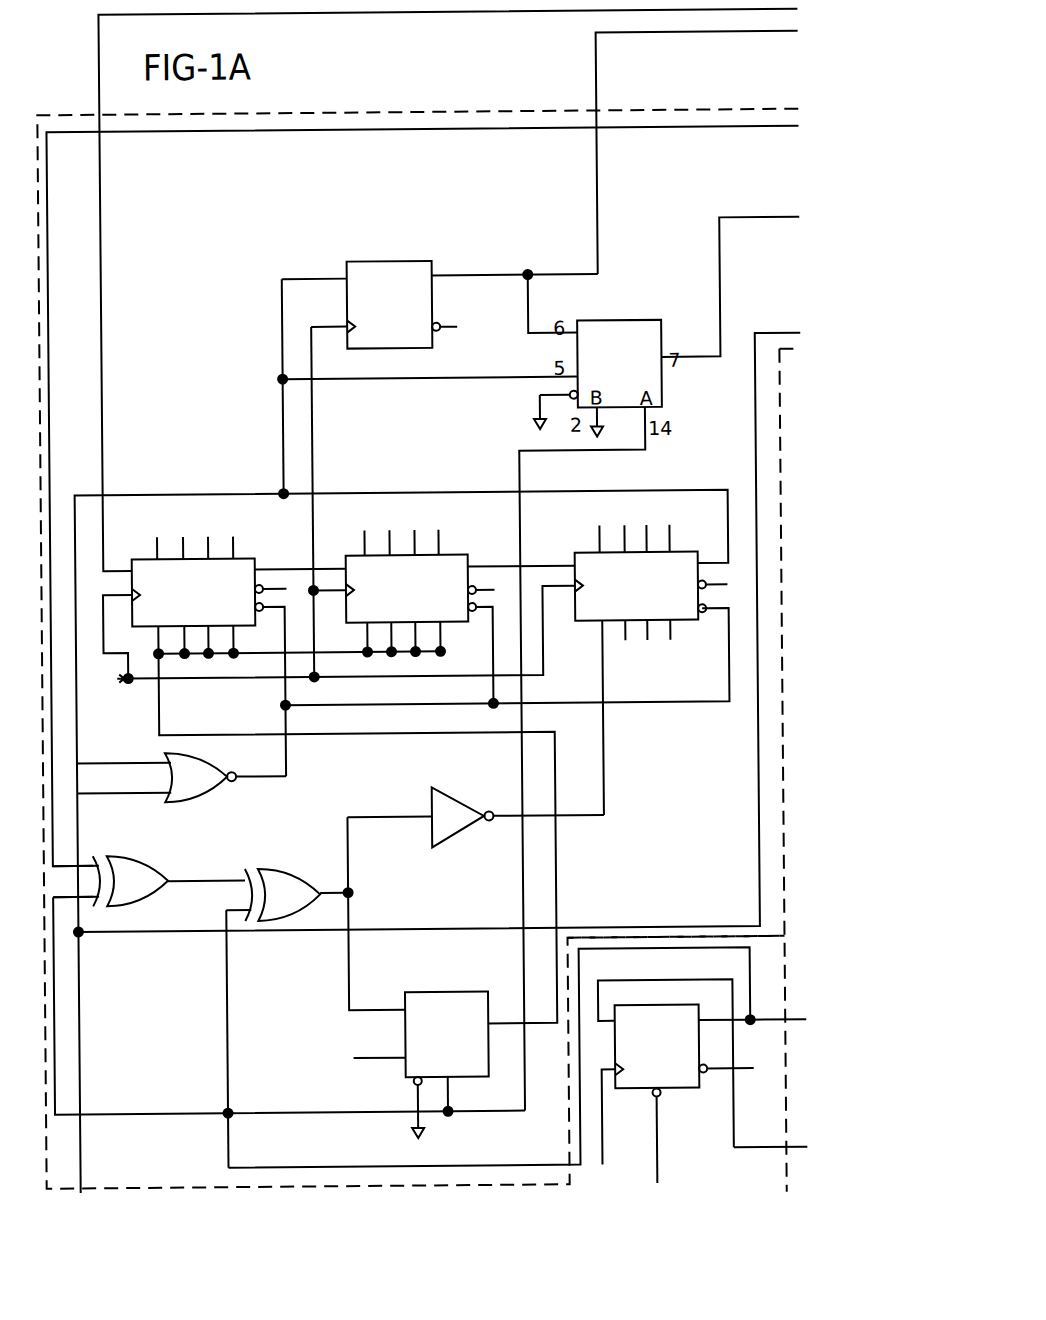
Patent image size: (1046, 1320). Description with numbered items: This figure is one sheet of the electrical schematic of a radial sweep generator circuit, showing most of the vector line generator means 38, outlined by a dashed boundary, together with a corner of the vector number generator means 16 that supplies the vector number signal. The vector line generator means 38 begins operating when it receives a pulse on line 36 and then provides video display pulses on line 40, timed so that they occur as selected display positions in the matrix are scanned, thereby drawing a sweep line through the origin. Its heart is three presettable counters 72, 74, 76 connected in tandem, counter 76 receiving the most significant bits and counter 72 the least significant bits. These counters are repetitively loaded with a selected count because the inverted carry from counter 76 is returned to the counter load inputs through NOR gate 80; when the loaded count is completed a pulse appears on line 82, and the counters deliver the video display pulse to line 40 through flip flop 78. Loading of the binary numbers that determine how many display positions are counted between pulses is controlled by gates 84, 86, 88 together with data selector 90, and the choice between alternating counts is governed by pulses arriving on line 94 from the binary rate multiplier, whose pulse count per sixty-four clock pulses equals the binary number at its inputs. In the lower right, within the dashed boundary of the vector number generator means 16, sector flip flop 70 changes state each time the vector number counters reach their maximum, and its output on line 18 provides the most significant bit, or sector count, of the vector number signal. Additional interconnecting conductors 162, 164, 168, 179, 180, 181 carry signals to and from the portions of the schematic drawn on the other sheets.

The line 36 is at (540, 12).
The vector line generator means 38 is at (372, 112).
The line 40 is at (601, 82).
The line 94 is at (711, 129).
The signal line 181 is at (782, 216).
The signal line 162 is at (785, 342).
The flip flop 78 is at (417, 241).
The line 82 is at (352, 492).
The counter 72 is at (240, 557).
The counter 74 is at (357, 555).
The counter 76 is at (578, 554).
The NOR gate 80 is at (200, 800).
The gate 84 is at (452, 832).
The gate 86 is at (136, 856).
The gate 88 is at (270, 870).
The data selector 90 is at (455, 992).
The line 18 is at (638, 950).
The vector number generator means 16 is at (792, 972).
The sector flip flop 70 is at (674, 1090).
The signal line 164 is at (598, 1160).
The signal line 168 is at (653, 1168).
The signal line 179 is at (800, 1024).
The signal line 180 is at (796, 1142).